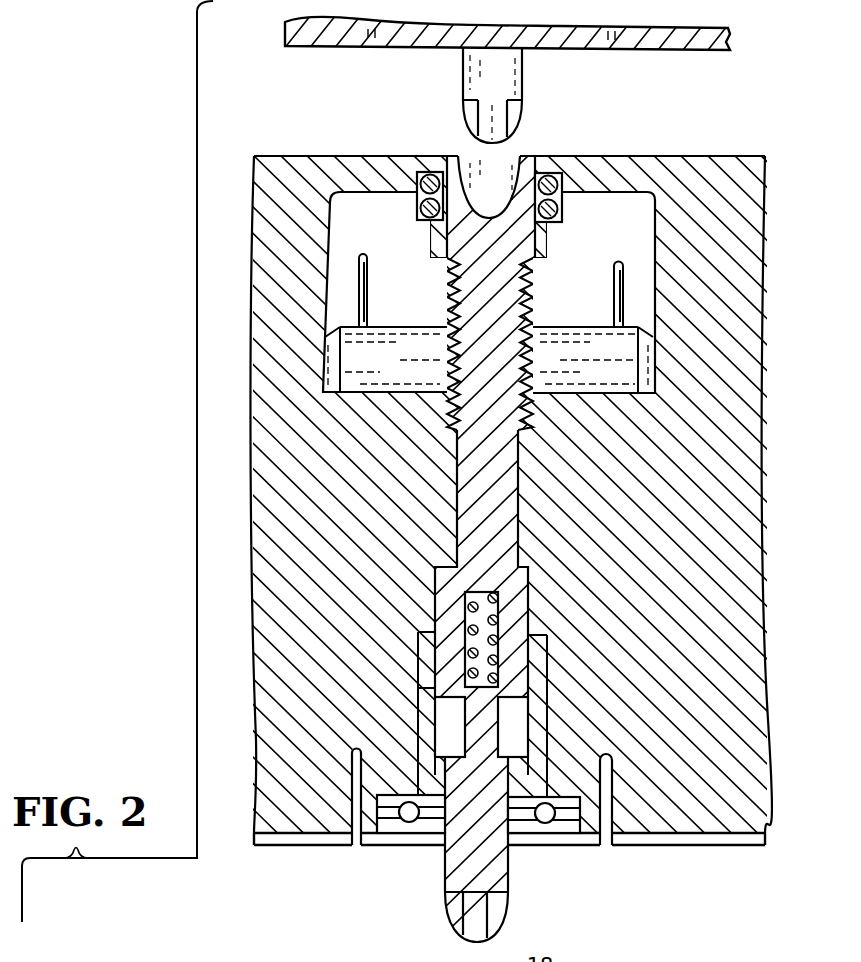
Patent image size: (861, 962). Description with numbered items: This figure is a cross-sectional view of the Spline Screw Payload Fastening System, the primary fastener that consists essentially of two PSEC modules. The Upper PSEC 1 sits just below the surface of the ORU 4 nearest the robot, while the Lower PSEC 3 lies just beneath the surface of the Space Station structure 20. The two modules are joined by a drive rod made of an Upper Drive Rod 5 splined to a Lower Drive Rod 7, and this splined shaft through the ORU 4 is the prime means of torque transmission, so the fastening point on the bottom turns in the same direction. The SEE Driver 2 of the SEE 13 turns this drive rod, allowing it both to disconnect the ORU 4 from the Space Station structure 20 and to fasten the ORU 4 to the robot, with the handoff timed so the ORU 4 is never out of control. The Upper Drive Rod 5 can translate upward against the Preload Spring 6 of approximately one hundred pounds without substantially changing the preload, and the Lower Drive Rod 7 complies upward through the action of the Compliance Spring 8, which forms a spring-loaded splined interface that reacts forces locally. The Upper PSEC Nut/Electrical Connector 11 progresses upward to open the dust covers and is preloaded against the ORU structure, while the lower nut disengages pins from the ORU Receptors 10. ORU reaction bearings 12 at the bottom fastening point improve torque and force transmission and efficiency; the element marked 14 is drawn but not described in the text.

The Upper PSEC 1 is at (364, 216).
The SEE Driver 2 is at (524, 72).
The Lower PSEC / electrical pins 3 is at (366, 266).
The ORU 4 is at (710, 156).
The Upper Drive Rod 5 is at (457, 507).
The Preload Spring 6 is at (417, 200).
The Lower Drive Rod 7 is at (498, 876).
The Compliance Spring 8 is at (493, 637).
The ORU Receptors 10 is at (357, 838).
The Upper PSEC Nut/Electrical Connector 11 is at (575, 327).
The ORU reaction bearings 12 is at (402, 823).
The SEE 13 is at (345, 48).
The ball retainer 14 is at (426, 833).
The Space Station structure 20 is at (733, 953).